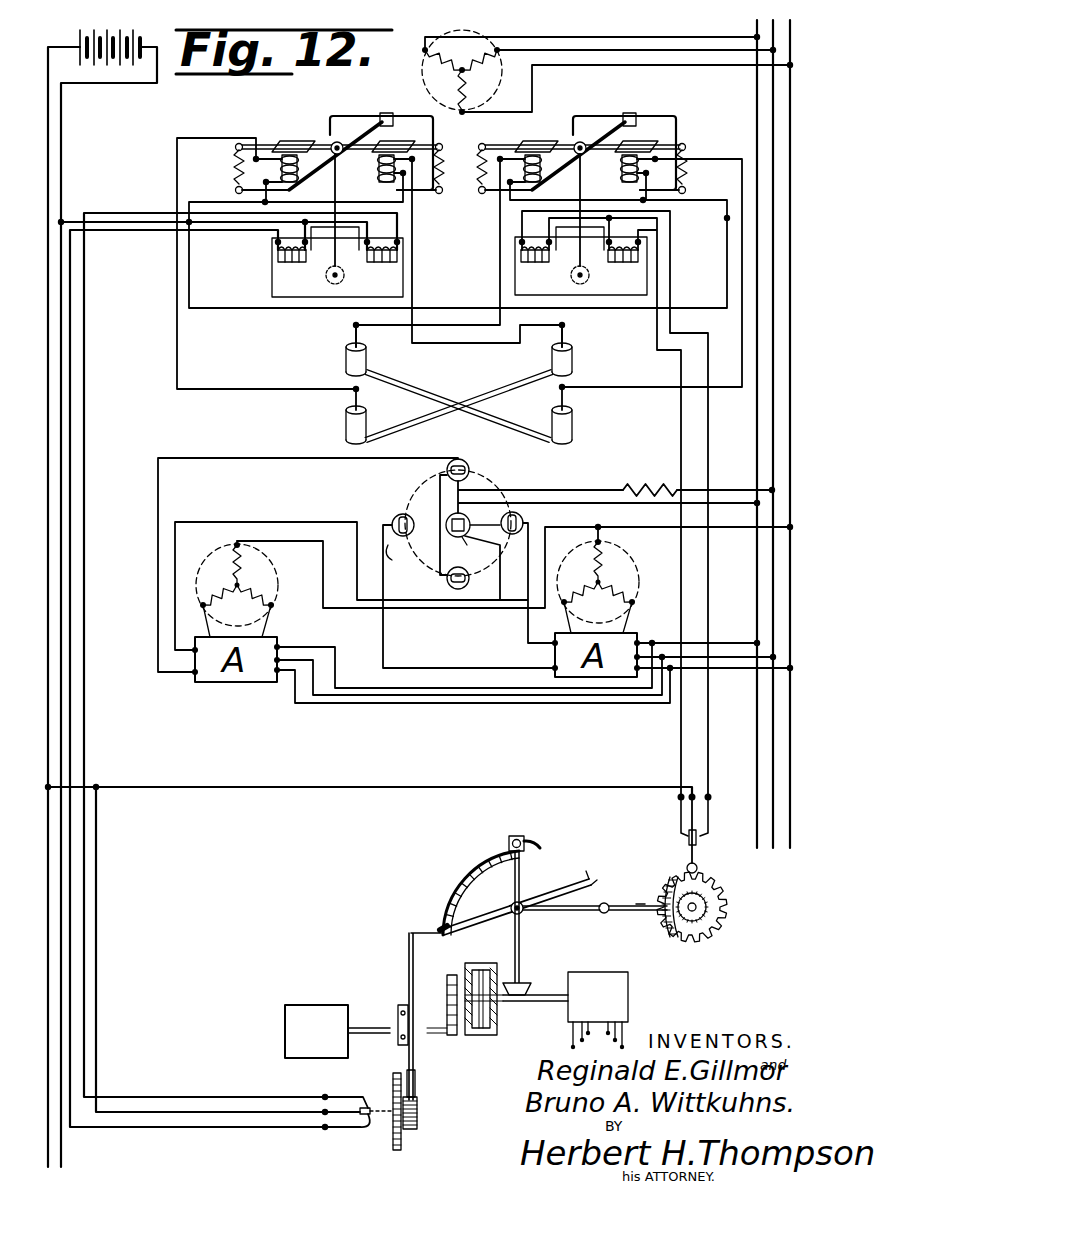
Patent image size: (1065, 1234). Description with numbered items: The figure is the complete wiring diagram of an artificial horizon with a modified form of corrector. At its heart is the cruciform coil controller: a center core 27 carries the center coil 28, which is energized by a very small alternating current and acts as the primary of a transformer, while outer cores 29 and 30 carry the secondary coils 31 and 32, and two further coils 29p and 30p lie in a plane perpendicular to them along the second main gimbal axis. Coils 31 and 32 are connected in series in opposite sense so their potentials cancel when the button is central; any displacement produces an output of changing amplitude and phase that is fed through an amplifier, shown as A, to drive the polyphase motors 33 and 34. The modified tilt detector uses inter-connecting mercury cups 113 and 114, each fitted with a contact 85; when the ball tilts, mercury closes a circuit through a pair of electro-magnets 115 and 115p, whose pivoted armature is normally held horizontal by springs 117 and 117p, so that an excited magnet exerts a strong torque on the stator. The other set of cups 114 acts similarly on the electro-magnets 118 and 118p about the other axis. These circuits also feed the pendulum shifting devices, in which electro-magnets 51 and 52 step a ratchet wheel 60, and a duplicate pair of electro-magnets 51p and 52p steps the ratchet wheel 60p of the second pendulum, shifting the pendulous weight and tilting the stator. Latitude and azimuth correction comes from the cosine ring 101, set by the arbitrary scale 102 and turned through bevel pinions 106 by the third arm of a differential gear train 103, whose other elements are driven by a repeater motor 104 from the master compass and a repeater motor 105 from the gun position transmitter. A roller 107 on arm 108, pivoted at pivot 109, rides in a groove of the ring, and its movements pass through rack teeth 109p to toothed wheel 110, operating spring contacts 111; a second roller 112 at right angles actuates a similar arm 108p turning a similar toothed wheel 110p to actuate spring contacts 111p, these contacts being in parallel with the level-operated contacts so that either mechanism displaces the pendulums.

The electro-magnet 118 is at (322, 146).
The relay coil 118p is at (380, 176).
The electro-magnet 115 is at (575, 128).
The electro-magnet 115p is at (655, 155).
The spring 117 is at (467, 168).
The spring 117p is at (686, 178).
The ratchet wheel 60 is at (337, 283).
The relay unit 60p is at (581, 274).
The electro-magnet 51 is at (294, 271).
The electro-magnet 52 is at (376, 271).
The coil 51p is at (538, 271).
The coil 52p is at (580, 298).
The contact 85 is at (350, 346).
The mercury cup 113 is at (368, 360).
The mercury cup 114 is at (550, 362).
The center core 27 is at (448, 516).
The center coil 28 is at (477, 553).
The outer core 29 is at (403, 561).
The coil 29p is at (468, 466).
The outer core 30 is at (488, 526).
The coil 30p is at (469, 582).
The coil 31 is at (392, 516).
The coil 32 is at (524, 517).
The A. C. motor 33 is at (253, 589).
The polyphase motor 34 is at (613, 587).
The cosine ring 101 is at (588, 878).
The arbitrary scale 102 is at (458, 865).
The differential gear train 103 is at (493, 952).
The repeater motor 104 is at (592, 975).
The repeater motor 105 is at (298, 1005).
The bevel pinions 106 is at (540, 978).
The roller 107 is at (514, 903).
The arm 108 is at (636, 904).
The arm 108p is at (408, 960).
The pivot 109 is at (600, 912).
The rack teeth 109p is at (668, 880).
The toothed wheel 110 is at (722, 898).
The toothed wheel 110p is at (400, 1148).
The spring contacts 111 is at (700, 840).
The spring contacts 111p is at (360, 1132).
The roller 112 is at (443, 928).